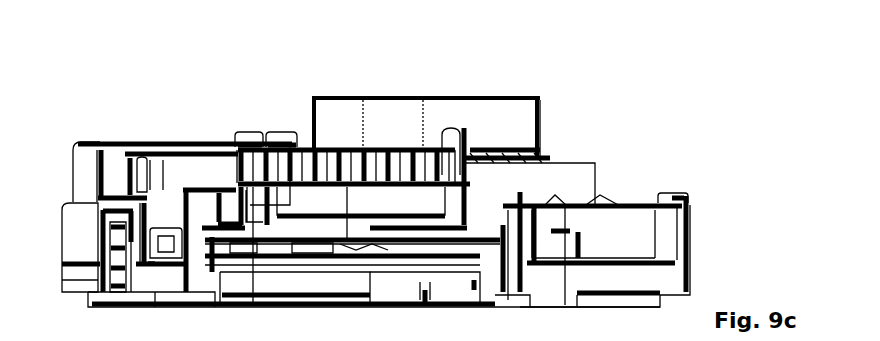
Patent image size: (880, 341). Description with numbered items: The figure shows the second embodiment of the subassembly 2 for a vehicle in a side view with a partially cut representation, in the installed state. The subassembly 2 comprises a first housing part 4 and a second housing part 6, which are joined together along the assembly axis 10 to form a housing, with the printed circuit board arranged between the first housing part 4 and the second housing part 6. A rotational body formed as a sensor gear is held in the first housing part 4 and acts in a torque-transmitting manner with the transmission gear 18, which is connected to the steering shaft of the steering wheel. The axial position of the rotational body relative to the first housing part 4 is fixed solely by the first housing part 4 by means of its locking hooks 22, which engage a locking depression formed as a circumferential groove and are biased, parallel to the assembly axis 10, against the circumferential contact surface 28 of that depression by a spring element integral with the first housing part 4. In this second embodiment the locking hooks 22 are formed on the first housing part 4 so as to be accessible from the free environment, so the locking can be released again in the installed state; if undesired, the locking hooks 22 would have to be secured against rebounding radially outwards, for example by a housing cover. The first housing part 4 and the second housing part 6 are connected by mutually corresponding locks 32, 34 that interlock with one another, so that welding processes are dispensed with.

The subassembly 2 is at (45, 87).
The first housing part 4 is at (642, 230).
The second housing part 6 is at (670, 285).
The assembly axis 10 is at (420, 114).
The transmission gear 18 is at (512, 160).
The locking hooks 22 is at (282, 137).
The contact surface 28 is at (327, 138).
The lock 32 is at (125, 236).
The lock 34 is at (120, 217).